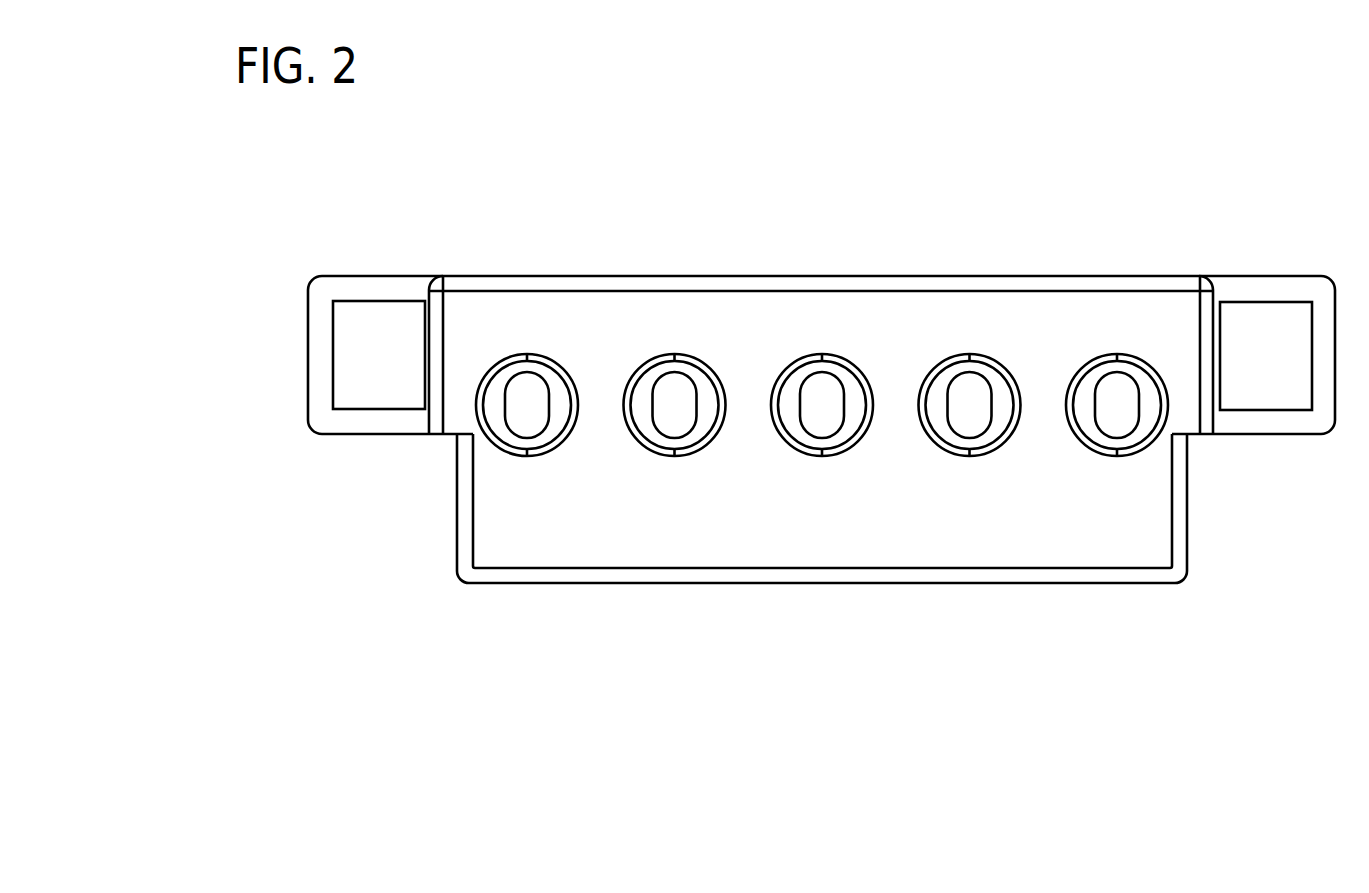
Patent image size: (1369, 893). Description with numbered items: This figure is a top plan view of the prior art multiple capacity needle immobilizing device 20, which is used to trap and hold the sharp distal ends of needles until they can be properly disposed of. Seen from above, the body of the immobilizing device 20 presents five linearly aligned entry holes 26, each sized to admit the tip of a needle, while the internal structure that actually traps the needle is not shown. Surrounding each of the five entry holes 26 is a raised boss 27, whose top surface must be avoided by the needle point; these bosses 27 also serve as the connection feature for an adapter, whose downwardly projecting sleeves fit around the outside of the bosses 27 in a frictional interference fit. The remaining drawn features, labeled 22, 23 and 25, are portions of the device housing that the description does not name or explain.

The multiple capacity needle immobilizing device 20 is at (342, 716).
The housing 22 is at (1108, 313).
The housing wall 23 is at (862, 276).
The side flange 25 is at (457, 495).
The entry holes 26 is at (525, 402).
The raised boss 27 is at (866, 439).